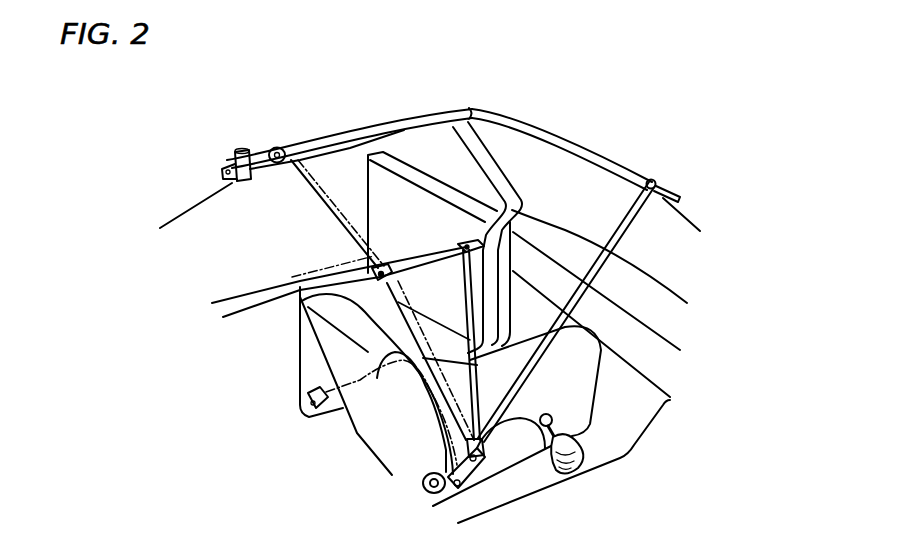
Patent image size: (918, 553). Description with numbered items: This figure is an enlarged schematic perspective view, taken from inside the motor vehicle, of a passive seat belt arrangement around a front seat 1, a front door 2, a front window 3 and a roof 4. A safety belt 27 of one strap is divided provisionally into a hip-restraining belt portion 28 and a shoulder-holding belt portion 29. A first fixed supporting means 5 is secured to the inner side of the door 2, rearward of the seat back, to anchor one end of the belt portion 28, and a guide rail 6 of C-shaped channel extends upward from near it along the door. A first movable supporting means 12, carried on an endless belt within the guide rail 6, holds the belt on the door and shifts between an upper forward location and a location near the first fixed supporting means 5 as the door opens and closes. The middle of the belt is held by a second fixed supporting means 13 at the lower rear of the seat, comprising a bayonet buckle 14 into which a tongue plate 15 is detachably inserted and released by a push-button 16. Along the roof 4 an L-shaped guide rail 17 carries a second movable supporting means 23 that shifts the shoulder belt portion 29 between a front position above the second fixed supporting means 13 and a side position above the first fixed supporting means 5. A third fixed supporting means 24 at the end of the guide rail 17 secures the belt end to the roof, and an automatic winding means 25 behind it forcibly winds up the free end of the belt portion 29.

The front seat 1 is at (520, 452).
The front door 2 is at (421, 180).
The front window 3 is at (611, 183).
The roof 4 is at (343, 143).
The first fixed supporting means 5 is at (380, 267).
The guide rail 6 is at (490, 214).
The first movable supporting means 12 is at (459, 241).
The second fixed supporting means 13 is at (512, 458).
The bayonet buckle 14 is at (423, 481).
The tongue plate 15 is at (521, 412).
The push-button 16 is at (480, 458).
The guide rail 17 is at (681, 198).
The second movable supporting means 23 is at (653, 180).
The third fixed supporting means 24 is at (277, 147).
The automatic winding means 25 is at (240, 151).
The safety belt 27 is at (573, 148).
The belt portion 28 is at (468, 297).
The belt portion 29 is at (397, 288).